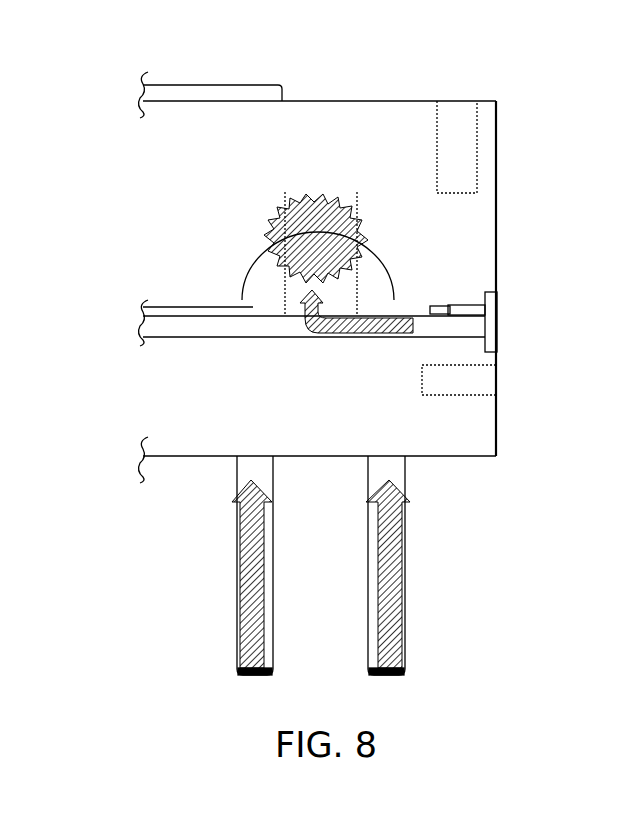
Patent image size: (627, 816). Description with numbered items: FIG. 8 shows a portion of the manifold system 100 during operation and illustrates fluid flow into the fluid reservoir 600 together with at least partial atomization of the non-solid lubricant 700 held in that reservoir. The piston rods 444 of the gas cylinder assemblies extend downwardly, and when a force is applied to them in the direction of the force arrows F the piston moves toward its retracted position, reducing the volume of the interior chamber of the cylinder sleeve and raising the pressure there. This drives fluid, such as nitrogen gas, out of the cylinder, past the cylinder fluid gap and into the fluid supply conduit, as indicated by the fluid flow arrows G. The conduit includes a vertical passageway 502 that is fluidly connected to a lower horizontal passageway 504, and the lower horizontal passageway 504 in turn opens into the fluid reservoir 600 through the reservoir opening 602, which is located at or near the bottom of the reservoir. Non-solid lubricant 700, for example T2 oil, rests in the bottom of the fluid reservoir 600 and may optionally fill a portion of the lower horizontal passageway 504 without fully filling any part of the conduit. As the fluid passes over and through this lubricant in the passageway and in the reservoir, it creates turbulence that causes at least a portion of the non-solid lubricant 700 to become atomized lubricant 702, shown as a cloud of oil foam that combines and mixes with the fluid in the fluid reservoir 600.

The manifold system 100 is at (344, 58).
The lower horizontal passageway 504 is at (197, 312).
The non-solid lubricant 700 is at (177, 327).
The fluid reservoir 600 is at (380, 255).
The atomized lubricant 702 is at (262, 240).
The fluid flow arrows G is at (358, 325).
The reservoir opening 602 is at (378, 308).
The vertical passageway 502 is at (440, 313).
The piston rods 444 is at (250, 473).
The force arrows F is at (395, 605).